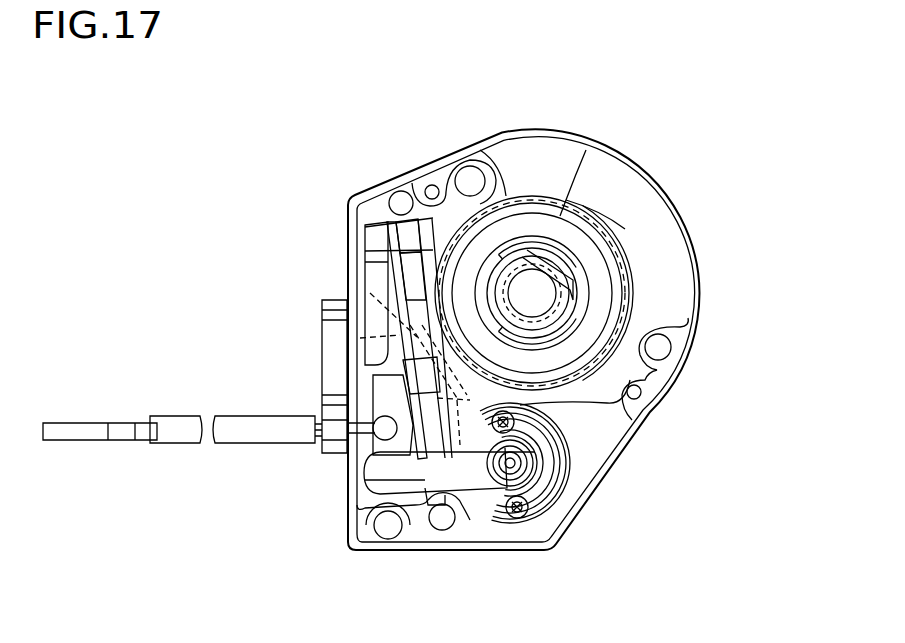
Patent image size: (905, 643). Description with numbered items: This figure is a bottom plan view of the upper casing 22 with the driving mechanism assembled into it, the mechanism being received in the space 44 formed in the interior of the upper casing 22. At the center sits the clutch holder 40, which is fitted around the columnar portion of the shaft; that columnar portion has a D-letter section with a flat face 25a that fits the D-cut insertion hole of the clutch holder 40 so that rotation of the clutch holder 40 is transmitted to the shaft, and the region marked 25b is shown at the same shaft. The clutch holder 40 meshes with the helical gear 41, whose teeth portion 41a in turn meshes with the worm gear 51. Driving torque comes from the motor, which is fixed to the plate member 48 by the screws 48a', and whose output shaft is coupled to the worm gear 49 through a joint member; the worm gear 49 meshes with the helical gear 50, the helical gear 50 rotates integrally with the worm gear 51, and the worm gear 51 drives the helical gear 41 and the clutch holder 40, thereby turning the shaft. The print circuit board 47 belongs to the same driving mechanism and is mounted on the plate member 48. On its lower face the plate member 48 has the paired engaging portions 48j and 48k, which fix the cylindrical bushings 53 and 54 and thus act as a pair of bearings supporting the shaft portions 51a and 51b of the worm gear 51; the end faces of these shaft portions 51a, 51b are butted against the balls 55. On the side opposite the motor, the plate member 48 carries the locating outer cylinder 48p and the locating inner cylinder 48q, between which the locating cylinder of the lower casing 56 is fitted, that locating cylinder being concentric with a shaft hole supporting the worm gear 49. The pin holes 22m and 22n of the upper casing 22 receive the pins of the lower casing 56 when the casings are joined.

The upper casing 22 is at (708, 340).
The pin hole 22m is at (430, 192).
The pin hole 22n is at (640, 393).
The flat face 25a is at (610, 223).
The shaft bore 25b is at (540, 303).
The clutch holder 40 is at (520, 227).
The helical gear 41 is at (614, 226).
The teeth portion 41a is at (507, 195).
The space 44 is at (662, 232).
The print circuit board 47 is at (370, 325).
The plate member 48 is at (428, 383).
The screws 48a' is at (604, 508).
The engaging portion 48j is at (397, 228).
The engaging portion 48k is at (383, 412).
The locating outer cylinder 48p is at (560, 472).
The locating inner cylinder 48q is at (548, 492).
The worm gear 49 is at (534, 462).
The helical gear 50 is at (482, 473).
The worm gear 51 is at (400, 283).
The shaft portion 51a is at (400, 258).
The shaft portion 51b is at (430, 456).
The cylindrical bushing 53 is at (373, 237).
The cylindrical bushing 54 is at (405, 365).
The balls 55 is at (401, 203).
The lower casing 56 is at (550, 268).